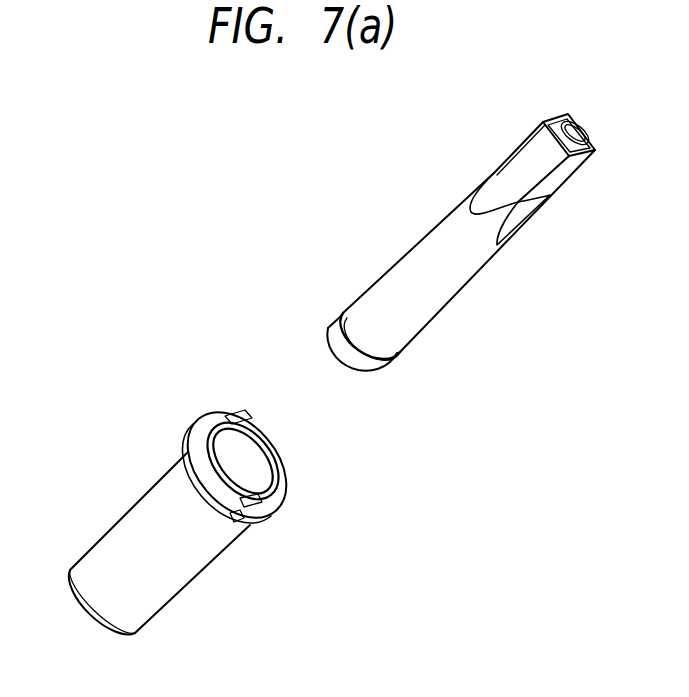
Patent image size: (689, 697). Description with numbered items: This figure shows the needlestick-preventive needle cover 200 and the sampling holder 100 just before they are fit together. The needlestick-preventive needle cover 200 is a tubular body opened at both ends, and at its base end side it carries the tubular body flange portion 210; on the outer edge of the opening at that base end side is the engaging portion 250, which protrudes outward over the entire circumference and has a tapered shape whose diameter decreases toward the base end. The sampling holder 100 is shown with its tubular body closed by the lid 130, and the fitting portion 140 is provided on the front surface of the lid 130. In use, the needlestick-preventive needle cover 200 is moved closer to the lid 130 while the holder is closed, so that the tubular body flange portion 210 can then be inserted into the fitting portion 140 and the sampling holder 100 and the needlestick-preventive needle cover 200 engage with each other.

The sampling holder 100 is at (103, 501).
The lid 130 is at (200, 418).
The fitting portion 140 is at (292, 478).
The needlestick-preventive needle cover 200 is at (370, 264).
The tubular body flange portion 210 is at (378, 369).
The engaging portion 250 is at (325, 342).